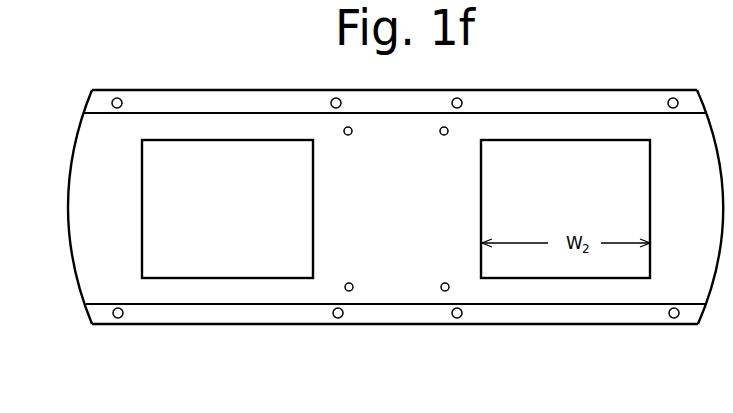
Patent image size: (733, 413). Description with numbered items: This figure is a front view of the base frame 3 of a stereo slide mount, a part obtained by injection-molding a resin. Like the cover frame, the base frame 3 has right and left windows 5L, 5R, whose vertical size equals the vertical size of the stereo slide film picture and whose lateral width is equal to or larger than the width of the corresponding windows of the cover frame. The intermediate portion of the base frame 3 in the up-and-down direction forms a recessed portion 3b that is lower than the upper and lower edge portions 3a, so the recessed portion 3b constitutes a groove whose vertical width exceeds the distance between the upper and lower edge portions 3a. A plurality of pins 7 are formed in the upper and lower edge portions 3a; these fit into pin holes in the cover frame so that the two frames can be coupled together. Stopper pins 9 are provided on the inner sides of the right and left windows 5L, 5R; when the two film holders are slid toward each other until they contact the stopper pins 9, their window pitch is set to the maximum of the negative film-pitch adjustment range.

The base frame 3 is at (208, 80).
The upper and lower edge portions 3a is at (154, 104).
The recessed portion 3b is at (98, 160).
The left window 5L is at (273, 140).
The right window 5R is at (613, 140).
The pins 7 is at (114, 98).
The stopper pins 9 is at (350, 127).